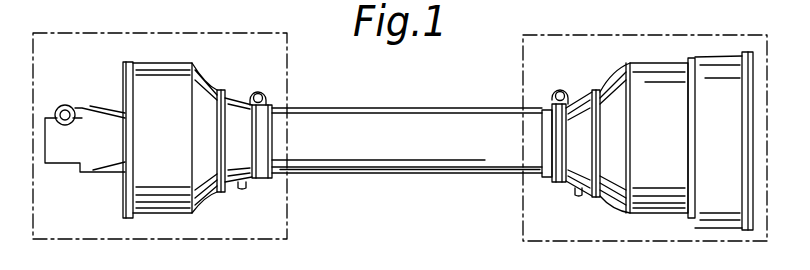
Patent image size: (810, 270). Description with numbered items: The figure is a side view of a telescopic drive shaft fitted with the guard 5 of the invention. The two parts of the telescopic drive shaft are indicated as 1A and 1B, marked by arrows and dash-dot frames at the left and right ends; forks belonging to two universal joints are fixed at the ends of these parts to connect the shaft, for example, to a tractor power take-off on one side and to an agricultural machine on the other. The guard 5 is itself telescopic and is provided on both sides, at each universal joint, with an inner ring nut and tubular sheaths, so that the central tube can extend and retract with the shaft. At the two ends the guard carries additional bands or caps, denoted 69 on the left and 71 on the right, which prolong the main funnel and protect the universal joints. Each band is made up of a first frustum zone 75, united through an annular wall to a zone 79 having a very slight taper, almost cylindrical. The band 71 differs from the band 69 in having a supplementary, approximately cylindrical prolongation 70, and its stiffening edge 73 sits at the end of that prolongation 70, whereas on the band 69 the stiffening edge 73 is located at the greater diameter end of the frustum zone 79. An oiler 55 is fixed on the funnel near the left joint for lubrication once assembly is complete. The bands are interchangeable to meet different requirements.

The guard 5 is at (347, 106).
The oiler 55 is at (241, 187).
The additional band 69 is at (167, 220).
The supplementary prolongation 70 is at (705, 226).
The additional band 71 is at (626, 55).
The stiffening edge 73 is at (124, 78).
The first frustum zone 75 is at (210, 83).
The frustum zone 79 is at (140, 199).
The part of telescopic drive shaft 1A is at (290, 202).
The part of telescopic drive shaft 1B is at (521, 82).